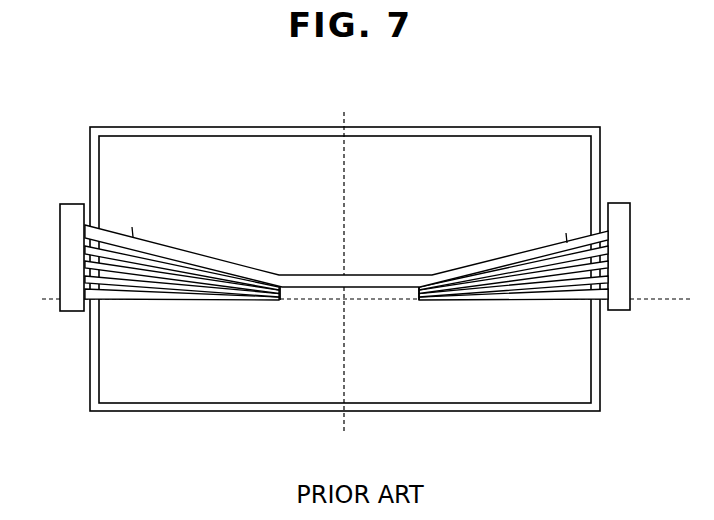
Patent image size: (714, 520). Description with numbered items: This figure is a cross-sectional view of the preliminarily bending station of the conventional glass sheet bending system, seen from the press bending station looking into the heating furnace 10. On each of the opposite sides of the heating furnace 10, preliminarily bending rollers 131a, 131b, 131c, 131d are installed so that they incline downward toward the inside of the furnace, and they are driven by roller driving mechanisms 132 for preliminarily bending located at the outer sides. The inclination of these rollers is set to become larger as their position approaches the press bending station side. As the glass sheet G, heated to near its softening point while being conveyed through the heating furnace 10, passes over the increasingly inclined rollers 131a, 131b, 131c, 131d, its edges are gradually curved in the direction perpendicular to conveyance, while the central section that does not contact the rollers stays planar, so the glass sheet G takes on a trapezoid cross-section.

The heating furnace 10 is at (458, 125).
The roller driving mechanism for preliminarily bending 132 is at (70, 203).
The preliminarily bending roller 131a is at (119, 297).
The preliminarily bending roller 131b is at (143, 282).
The preliminarily bending roller 131c is at (143, 262).
The preliminarily bending roller 131d is at (191, 259).
The glass sheet G is at (253, 267).